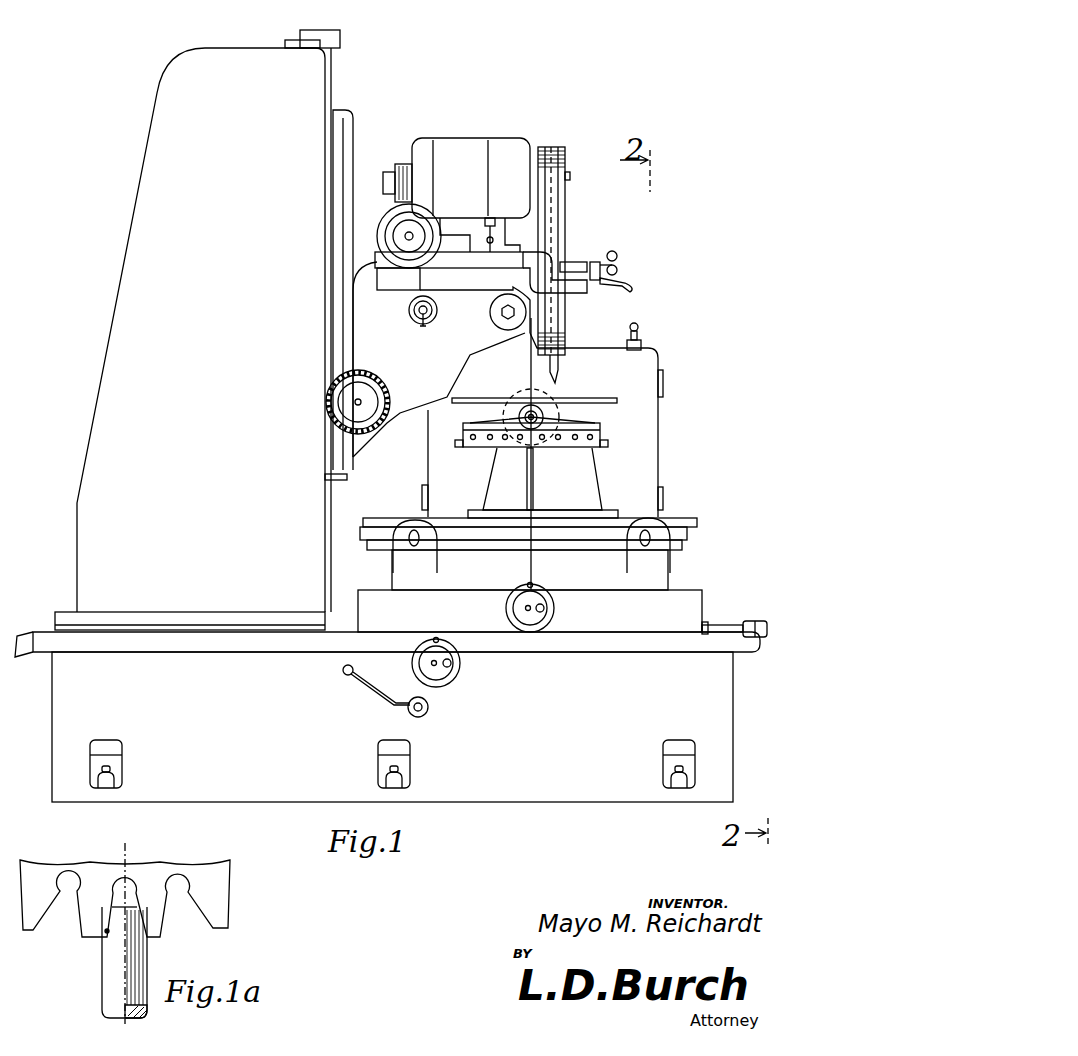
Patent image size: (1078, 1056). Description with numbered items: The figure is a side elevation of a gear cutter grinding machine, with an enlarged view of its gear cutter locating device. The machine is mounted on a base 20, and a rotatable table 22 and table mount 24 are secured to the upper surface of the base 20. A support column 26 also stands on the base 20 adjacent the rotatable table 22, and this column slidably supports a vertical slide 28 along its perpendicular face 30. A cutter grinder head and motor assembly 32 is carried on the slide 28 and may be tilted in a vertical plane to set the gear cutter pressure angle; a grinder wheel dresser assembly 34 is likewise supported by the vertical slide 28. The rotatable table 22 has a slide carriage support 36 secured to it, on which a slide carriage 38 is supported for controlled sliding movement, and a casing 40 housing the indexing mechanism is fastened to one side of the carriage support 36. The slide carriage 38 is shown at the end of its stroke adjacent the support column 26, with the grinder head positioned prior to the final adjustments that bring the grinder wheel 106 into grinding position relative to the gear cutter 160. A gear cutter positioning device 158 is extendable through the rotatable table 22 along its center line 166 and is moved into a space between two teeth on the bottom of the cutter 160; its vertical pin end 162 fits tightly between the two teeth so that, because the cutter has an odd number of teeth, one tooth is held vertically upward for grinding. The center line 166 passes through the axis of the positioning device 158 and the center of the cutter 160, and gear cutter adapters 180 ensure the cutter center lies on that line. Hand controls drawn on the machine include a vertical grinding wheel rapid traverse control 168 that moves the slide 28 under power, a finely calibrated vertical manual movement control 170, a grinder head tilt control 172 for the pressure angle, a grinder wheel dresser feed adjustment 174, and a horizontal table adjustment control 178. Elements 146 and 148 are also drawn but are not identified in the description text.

In FIG. 1, the base 20 is at (62, 706).
In FIG. 1, the rotatable table 22 is at (662, 527).
In FIG. 1, the table mount 24 is at (690, 595).
In FIG. 1, the support column 26 is at (95, 455).
In FIG. 1, the vertical slide 28 is at (410, 400).
In FIG. 1, the perpendicular face 30 is at (322, 494).
In FIG. 1, the cutter grinder head and motor assembly 32 is at (566, 152).
In FIG. 1, the grinder wheel dresser assembly 34 is at (598, 258).
In FIG. 1, the slide carriage support 36 is at (591, 490).
In FIG. 1, the slide carriage 38 is at (601, 437).
In FIG. 1, the casing 40 is at (650, 418).
In FIG. 1, the grinder wheel 106 is at (560, 366).
In FIG. 1, the holder bar 146 is at (570, 413).
In FIG. 1, the clamp knob 148 is at (641, 338).
In FIG. 1, the gear cutter positioning device 158 is at (530, 462).
In FIG. 1A, the gear cutter positioning device 158 is at (110, 972).
In FIG. 1, the gear cutter 160 is at (522, 392).
In FIG. 1A, the gear cutter 160 is at (218, 913).
In FIG. 1A, the vertical pin end 162 is at (105, 932).
In FIG. 1, the center line 166 is at (532, 540).
In FIG. 1A, the center line 166 is at (125, 1025).
In FIG. 1, the vertical grinding wheel rapid traverse control 168 is at (409, 713).
In FIG. 1, the vertical manual movement control 170 is at (446, 682).
In FIG. 1, the grinder head tilt control 172 is at (326, 404).
In FIG. 1, the grinder wheel dresser feed adjustment 174 is at (384, 224).
In FIG. 1, the horizontal table adjustment control 178 is at (506, 607).
In FIG. 1, the gear cutter adapter 180 is at (545, 410).